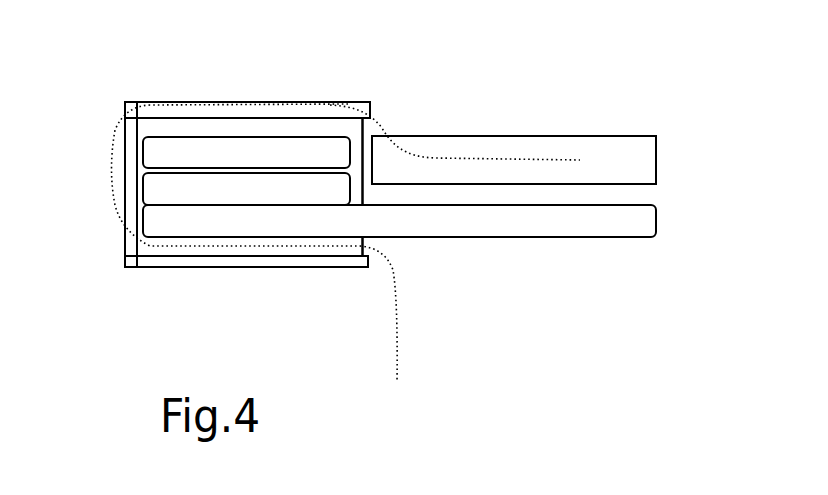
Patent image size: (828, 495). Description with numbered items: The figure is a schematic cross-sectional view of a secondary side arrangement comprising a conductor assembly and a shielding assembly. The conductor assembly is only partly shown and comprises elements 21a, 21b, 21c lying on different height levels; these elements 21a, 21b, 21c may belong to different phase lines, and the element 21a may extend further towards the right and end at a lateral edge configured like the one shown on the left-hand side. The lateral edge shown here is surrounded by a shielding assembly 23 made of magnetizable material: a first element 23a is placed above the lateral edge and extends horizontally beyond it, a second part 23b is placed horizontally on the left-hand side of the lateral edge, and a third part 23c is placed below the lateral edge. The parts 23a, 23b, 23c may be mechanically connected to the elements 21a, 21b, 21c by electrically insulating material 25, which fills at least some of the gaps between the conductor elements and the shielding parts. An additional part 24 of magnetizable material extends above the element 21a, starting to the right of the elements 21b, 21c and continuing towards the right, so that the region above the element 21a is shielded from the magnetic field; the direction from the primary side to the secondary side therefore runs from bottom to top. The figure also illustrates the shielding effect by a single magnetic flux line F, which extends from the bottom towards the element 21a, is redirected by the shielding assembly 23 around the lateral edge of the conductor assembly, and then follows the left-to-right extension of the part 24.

The element of the conductor assembly 21a is at (173, 220).
The element of the conductor assembly 21b is at (183, 190).
The element of the conductor assembly 21c is at (165, 157).
The shielding assembly 23 is at (206, 206).
The first element of the shielding assembly 23a is at (212, 100).
The second part of the shielding assembly 23b is at (125, 157).
The third part of the shielding assembly 23c is at (330, 268).
The additional part of magnetizable material 24 is at (502, 136).
The electrically insulating material 25 is at (278, 130).
The flux path F is at (110, 161).